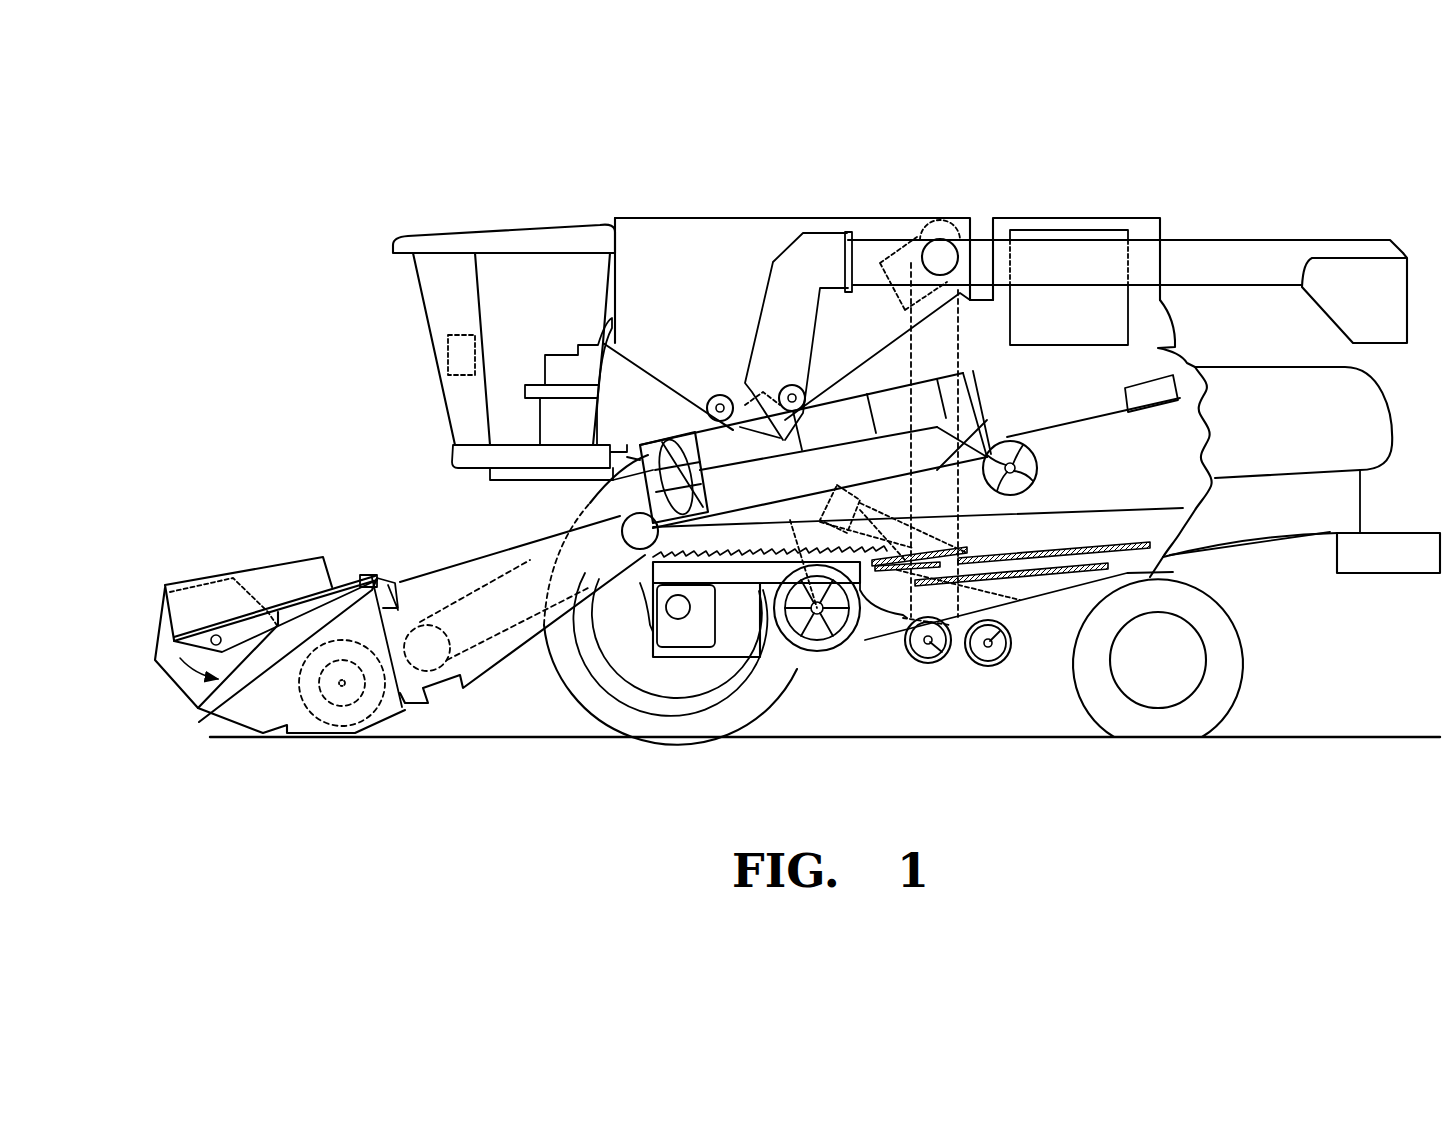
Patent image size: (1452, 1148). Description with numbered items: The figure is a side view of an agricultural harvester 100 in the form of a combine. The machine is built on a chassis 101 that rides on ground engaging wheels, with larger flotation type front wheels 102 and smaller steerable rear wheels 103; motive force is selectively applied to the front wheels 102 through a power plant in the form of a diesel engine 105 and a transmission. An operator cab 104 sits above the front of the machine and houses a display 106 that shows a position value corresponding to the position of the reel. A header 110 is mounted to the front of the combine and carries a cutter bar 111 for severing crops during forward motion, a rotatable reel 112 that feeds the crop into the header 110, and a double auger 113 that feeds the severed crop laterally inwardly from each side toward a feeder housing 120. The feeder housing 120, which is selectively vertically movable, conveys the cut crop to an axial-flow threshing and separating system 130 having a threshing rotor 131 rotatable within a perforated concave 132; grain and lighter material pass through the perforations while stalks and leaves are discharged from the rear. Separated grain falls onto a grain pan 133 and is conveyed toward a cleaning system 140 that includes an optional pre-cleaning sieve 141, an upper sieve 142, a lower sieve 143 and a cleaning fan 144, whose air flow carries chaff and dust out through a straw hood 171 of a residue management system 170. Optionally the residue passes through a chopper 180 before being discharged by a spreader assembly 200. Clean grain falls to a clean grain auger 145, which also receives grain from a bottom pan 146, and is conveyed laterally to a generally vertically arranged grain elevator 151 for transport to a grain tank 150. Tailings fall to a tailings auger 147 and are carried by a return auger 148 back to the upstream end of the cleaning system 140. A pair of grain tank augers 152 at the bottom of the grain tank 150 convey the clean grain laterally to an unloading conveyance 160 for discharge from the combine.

The agricultural harvester 100 is at (492, 200).
The chassis 101 is at (1172, 567).
The front wheels 102 is at (582, 690).
The rear wheels 103 is at (1240, 680).
The operator cab 104 is at (428, 300).
The diesel engine 105 is at (1058, 232).
The display 106 is at (447, 353).
The header 110 is at (249, 548).
The cutter bar 111 is at (272, 740).
The rotatable reel 112 is at (163, 592).
The double auger 113 is at (362, 700).
The feeder housing 120 is at (470, 563).
The threshing and separating system 130 is at (580, 495).
The threshing rotor 131 is at (668, 452).
The perforated concave 132 is at (847, 433).
The grain pan 133 is at (655, 565).
The cleaning system 140 is at (876, 675).
The pre-cleaning sieve 141 is at (967, 550).
The upper sieve 142 is at (1067, 552).
The lower sieve 143 is at (1040, 580).
The cleaning fan 144 is at (822, 640).
The clean grain auger 145 is at (940, 650).
The bottom pan 146 is at (1110, 660).
The tailings auger 147 is at (987, 663).
The return auger 148 is at (880, 532).
The grain tank 150 is at (673, 228).
The grain elevator 151 is at (963, 355).
The grain tank augers 152 is at (805, 390).
The unloading conveyance 160 is at (1255, 250).
The residue management system 170 is at (1336, 598).
The straw hood 171 is at (1370, 410).
The chopper 180 is at (1122, 403).
The spreader assembly 200 is at (1413, 527).